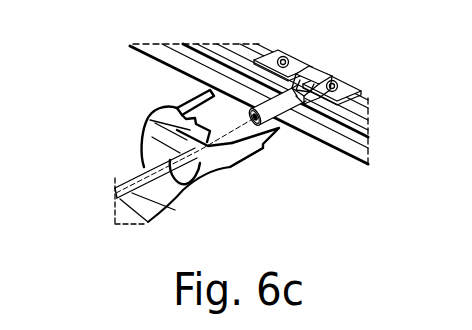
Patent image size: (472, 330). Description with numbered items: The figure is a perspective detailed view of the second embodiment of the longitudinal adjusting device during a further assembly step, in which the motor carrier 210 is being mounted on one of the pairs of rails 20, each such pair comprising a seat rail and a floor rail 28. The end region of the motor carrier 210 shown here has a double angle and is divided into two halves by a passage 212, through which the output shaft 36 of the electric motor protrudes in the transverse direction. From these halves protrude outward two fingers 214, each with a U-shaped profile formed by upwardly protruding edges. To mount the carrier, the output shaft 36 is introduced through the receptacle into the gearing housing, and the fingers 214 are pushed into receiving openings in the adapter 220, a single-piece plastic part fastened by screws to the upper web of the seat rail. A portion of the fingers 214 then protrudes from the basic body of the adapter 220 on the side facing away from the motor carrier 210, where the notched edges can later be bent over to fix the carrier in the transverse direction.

The pair of rails 20 is at (370, 135).
The floor rail 28 is at (363, 163).
The output shaft 36 is at (115, 186).
The motor carrier 210 is at (137, 213).
The passage 212 is at (153, 118).
The finger 214 is at (197, 98).
The adapter 220 is at (316, 69).